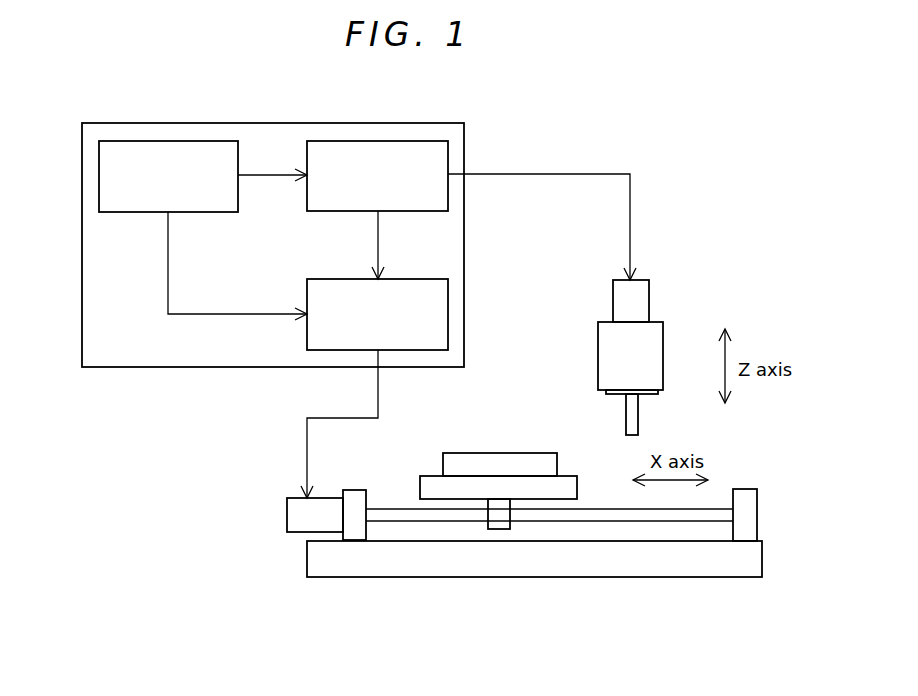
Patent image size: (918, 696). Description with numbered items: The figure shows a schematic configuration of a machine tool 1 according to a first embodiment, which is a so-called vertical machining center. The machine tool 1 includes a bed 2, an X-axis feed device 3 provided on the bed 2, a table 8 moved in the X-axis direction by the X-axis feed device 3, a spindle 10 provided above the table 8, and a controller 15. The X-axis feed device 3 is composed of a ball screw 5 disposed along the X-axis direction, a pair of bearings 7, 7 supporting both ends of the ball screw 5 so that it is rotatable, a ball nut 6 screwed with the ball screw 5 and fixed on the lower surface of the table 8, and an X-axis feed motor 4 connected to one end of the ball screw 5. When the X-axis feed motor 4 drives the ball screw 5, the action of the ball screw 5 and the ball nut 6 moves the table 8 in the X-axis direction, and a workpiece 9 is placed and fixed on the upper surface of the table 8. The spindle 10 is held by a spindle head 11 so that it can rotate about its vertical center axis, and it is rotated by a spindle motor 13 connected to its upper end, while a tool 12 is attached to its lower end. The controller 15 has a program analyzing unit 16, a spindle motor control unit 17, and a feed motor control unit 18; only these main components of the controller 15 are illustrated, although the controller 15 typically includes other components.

The machine tool 1 is at (705, 212).
The bed 2 is at (307, 566).
The X-axis feed device 3 is at (593, 487).
The X-axis feed motor 4 is at (287, 514).
The ball screw 5 is at (402, 509).
The ball nut 6 is at (499, 527).
The bearings 7 is at (356, 490).
The table 8 is at (460, 480).
The workpiece 9 is at (490, 460).
The spindle 10 is at (606, 392).
The spindle head 11 is at (603, 350).
The tool 12 is at (637, 409).
The spindle motor 13 is at (646, 300).
The controller 15 is at (464, 249).
The program analyzing unit 16 is at (200, 212).
The spindle motor control unit 17 is at (448, 165).
The feed motor control unit 18 is at (448, 313).